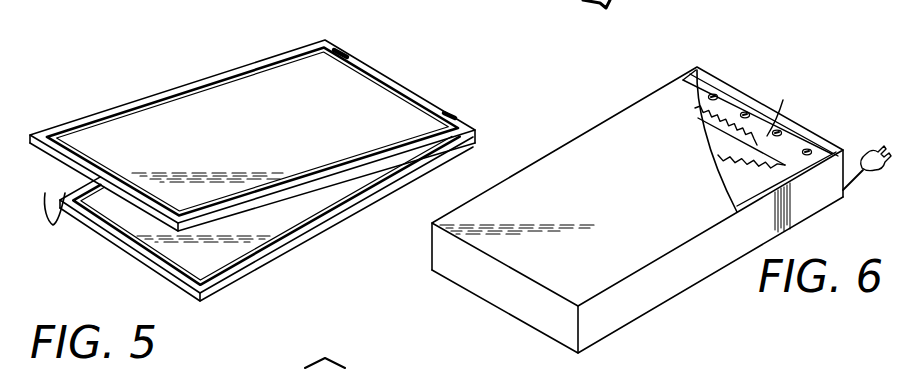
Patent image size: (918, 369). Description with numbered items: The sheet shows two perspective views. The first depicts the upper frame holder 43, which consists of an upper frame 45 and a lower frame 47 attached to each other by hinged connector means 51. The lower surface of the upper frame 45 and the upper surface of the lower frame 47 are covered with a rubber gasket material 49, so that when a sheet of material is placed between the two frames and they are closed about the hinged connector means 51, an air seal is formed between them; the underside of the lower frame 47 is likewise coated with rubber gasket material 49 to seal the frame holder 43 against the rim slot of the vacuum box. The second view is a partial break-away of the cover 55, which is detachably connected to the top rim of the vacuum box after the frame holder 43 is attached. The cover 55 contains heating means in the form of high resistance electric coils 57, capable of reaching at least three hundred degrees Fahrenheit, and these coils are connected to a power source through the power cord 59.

In FIG. 5, the upper frame holder 43 is at (267, 168).
In FIG. 5, the upper frame 45 is at (112, 110).
In FIG. 5, the lower frame 47 is at (163, 276).
In FIG. 5, the rubber gasket material 49 is at (52, 147).
In FIG. 5, the hinged connector means 51 is at (343, 52).
In FIG. 6, the cover 55 is at (633, 103).
In FIG. 6, the high resistance electric coils 57 is at (730, 120).
In FIG. 6, the power cord 59 is at (873, 152).